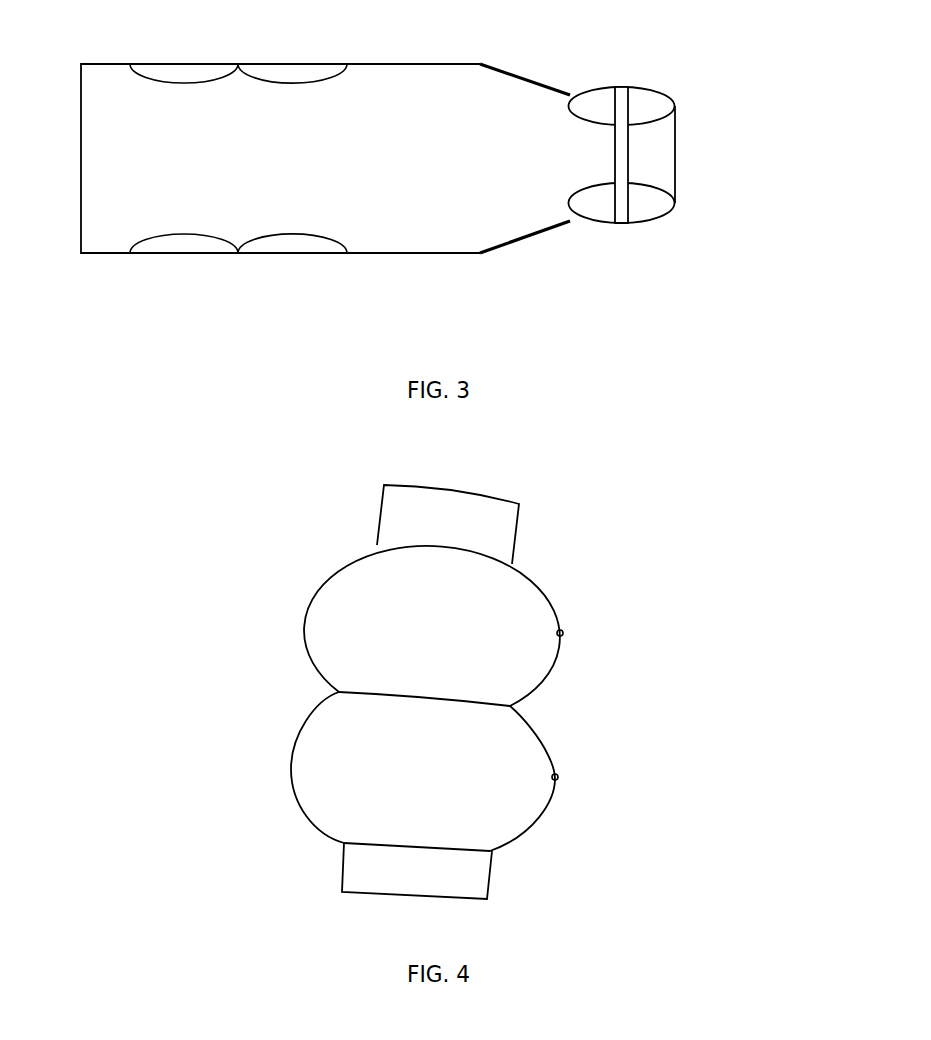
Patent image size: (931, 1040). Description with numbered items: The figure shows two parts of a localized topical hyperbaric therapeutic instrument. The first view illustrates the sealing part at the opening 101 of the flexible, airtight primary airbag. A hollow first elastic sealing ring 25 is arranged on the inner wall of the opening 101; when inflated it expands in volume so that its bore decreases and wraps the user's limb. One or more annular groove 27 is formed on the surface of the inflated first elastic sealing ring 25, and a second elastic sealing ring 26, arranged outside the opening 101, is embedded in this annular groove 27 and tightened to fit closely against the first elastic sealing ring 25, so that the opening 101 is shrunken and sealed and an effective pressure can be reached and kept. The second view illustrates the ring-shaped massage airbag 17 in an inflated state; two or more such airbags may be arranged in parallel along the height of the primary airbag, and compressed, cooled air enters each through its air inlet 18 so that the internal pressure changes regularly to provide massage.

In FIG. 3, the opening of the primary airbag 101 is at (675, 150).
In FIG. 3, the first elastic sealing ring 25 is at (653, 205).
In FIG. 3, the second elastic sealing ring 26 is at (628, 137).
In FIG. 3, the annular groove 27 is at (627, 223).
In FIG. 4, the massage airbag 17 is at (320, 577).
In FIG. 4, the air inlet of the massage airbag 18 is at (562, 631).